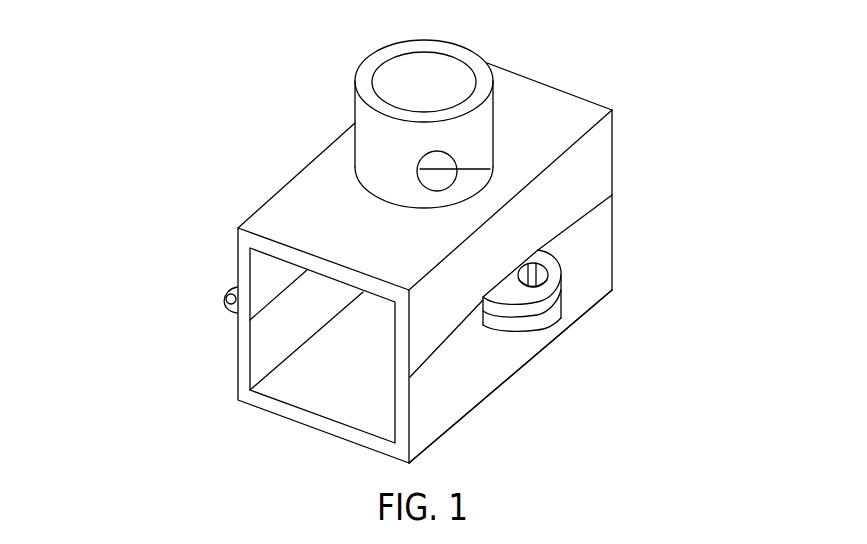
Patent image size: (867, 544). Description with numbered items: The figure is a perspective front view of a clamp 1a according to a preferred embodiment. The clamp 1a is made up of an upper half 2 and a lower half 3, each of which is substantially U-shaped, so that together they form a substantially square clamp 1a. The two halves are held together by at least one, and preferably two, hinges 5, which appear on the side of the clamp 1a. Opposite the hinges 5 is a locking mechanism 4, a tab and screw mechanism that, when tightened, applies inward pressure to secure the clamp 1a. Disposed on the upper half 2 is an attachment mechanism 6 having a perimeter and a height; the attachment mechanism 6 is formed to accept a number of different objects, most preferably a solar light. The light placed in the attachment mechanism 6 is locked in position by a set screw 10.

The clamp 1a is at (373, 228).
The upper half 2 is at (592, 170).
The lower half 3 is at (455, 383).
The locking mechanism 4 is at (557, 320).
The hinge 5 is at (227, 298).
The attachment mechanism 6 is at (377, 147).
The set screw 10 is at (493, 170).